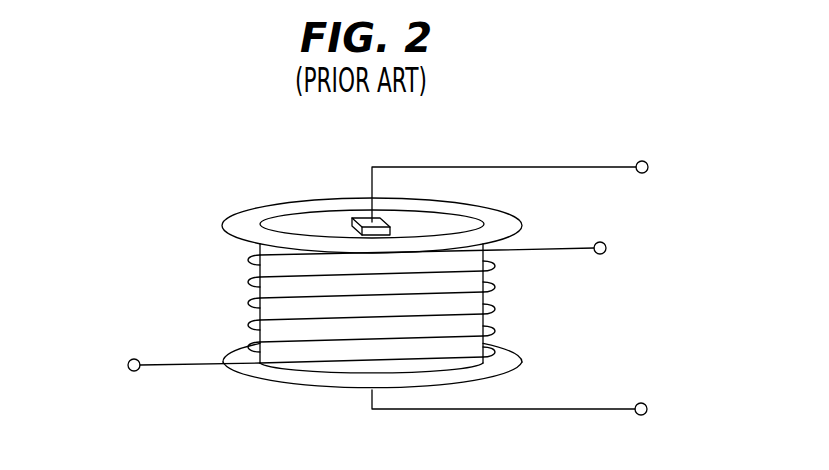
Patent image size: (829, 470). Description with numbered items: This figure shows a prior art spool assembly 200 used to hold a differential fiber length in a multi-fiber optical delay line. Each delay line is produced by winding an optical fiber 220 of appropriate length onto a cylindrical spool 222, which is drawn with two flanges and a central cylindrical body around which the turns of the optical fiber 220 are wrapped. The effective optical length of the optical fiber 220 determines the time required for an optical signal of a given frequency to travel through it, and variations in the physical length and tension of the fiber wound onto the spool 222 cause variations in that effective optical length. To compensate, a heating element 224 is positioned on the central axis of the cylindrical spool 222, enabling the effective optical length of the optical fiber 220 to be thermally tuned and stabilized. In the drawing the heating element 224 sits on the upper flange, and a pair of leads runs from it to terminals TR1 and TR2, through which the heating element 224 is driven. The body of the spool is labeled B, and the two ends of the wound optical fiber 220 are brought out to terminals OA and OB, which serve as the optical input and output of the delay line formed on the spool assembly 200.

The prior art transformer 200 is at (525, 110).
The optical fiber 220 is at (290, 340).
The cylindrical spool 222 is at (350, 380).
The heating element 224 is at (362, 219).
The bobbin B is at (443, 222).
The terminal 1 TR1 is at (515, 174).
The terminal 2 TR2 is at (515, 419).
The output terminal A OA is at (618, 248).
The output terminal B OB is at (176, 366).